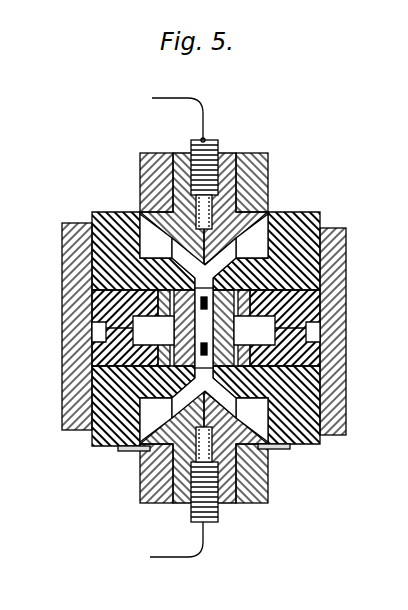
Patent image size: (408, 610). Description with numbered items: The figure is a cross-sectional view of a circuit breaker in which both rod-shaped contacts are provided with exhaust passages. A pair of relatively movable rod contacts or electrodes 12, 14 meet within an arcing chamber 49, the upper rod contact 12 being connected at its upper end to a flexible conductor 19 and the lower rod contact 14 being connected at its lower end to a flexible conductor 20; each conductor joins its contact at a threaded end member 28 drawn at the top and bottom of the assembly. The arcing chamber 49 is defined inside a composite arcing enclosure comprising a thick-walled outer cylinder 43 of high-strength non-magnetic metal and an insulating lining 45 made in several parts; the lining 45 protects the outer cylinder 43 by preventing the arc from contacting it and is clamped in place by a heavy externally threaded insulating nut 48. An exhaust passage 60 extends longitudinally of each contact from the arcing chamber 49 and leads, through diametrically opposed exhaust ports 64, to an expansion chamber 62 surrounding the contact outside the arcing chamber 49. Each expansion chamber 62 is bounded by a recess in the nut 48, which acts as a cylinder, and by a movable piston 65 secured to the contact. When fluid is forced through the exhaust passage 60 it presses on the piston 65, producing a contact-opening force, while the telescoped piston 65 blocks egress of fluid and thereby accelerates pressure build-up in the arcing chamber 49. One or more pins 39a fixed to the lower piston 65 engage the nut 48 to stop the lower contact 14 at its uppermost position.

The flexible conductor 19 is at (160, 99).
The flexible conductor 20 is at (160, 558).
The threaded electrode bolt 28 is at (228, 134).
The movable piston 65 is at (263, 156).
The insulating nut 48 is at (297, 214).
The expansion chamber 62 is at (156, 328).
The exhaust ports 64 is at (230, 250).
The exhaust passage 60 is at (202, 276).
The insulating lining 45 is at (96, 300).
The upper rod contact 12 is at (168, 318).
The lower rod contact 14 is at (240, 318).
The outer cylinder 43 is at (338, 339).
The arcing chamber 49 is at (92, 355).
The pins 39a is at (126, 452).